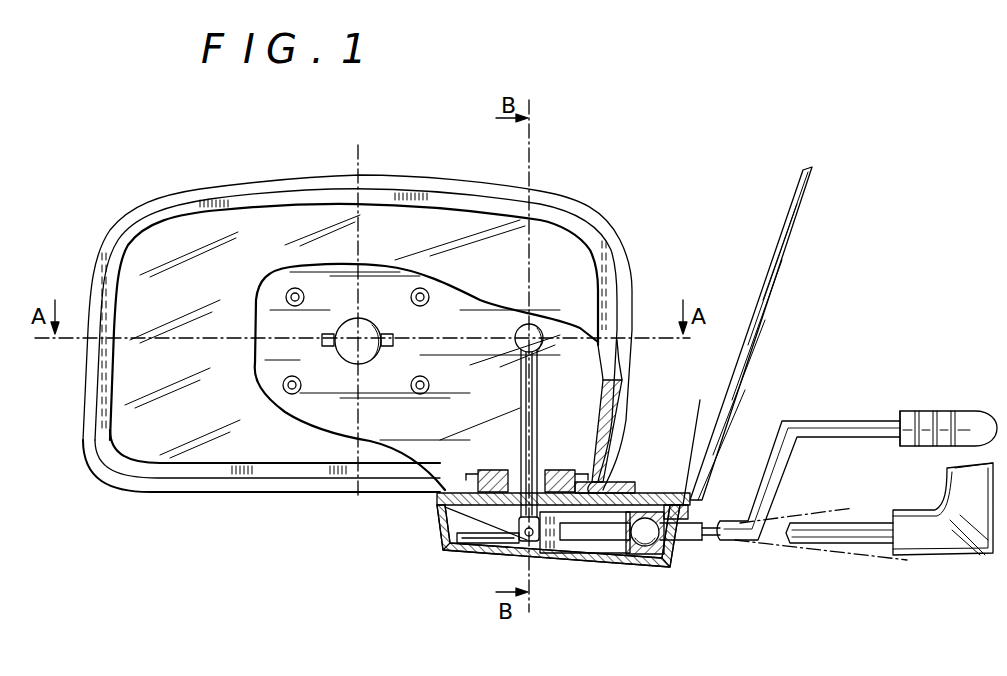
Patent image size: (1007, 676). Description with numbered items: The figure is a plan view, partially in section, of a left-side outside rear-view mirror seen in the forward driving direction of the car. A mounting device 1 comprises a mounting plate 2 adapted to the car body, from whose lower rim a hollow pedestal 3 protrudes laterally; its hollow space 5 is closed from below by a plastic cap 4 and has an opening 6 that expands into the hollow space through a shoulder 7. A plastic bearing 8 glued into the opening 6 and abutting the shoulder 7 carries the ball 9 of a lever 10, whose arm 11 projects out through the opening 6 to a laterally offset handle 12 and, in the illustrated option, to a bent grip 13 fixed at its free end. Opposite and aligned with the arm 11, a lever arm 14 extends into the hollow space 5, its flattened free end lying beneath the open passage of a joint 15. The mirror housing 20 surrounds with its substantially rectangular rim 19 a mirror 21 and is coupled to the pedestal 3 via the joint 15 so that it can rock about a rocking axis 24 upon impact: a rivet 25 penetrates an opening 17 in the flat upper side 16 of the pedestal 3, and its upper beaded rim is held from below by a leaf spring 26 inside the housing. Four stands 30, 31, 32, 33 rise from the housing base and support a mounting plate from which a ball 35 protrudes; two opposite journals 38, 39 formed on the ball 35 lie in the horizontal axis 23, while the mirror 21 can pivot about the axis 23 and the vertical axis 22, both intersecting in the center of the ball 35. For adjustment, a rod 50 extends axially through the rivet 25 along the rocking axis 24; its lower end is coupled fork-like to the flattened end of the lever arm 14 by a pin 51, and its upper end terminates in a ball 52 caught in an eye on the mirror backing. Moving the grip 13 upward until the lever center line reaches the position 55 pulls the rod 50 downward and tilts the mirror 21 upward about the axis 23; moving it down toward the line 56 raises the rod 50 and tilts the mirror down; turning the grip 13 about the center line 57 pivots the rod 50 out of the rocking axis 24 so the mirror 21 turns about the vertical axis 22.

The mounting device 1 is at (752, 252).
The mounting plate 2 is at (792, 210).
The hollow pedestal 3 is at (437, 508).
The plastic cap 4 is at (535, 545).
The hollow space 5 is at (512, 540).
The opening 6 is at (680, 542).
The shoulder 7 is at (647, 493).
The plastic bearing 8 is at (690, 510).
The ball 9 is at (660, 548).
The lever 10 is at (660, 553).
The arm 11 is at (712, 535).
The handle 12 is at (903, 446).
The bent grip 13 is at (955, 555).
The lever arm 14 is at (590, 553).
The joint 15 is at (490, 538).
The flat upper side 16 is at (608, 497).
The opening 17 is at (496, 470).
The rim 19 is at (101, 278).
The mirror housing 20 is at (98, 240).
The mirror 21 is at (178, 228).
The axis 22 is at (362, 152).
The axis 23 is at (186, 340).
The rocking axis 24 is at (534, 170).
The rivet 25 is at (600, 470).
The leaf spring 26 is at (575, 478).
The stand 30 is at (294, 288).
The stand 31 is at (420, 288).
The stand 32 is at (283, 388).
The stand 33 is at (428, 388).
The ball 35 is at (374, 360).
The journal 38 is at (328, 347).
The journal 39 is at (393, 340).
The rod 50 is at (540, 428).
The pin 51 is at (538, 536).
The ball 52 is at (542, 338).
The position 55 is at (800, 515).
The line 56 is at (845, 552).
The center line 57 is at (882, 543).